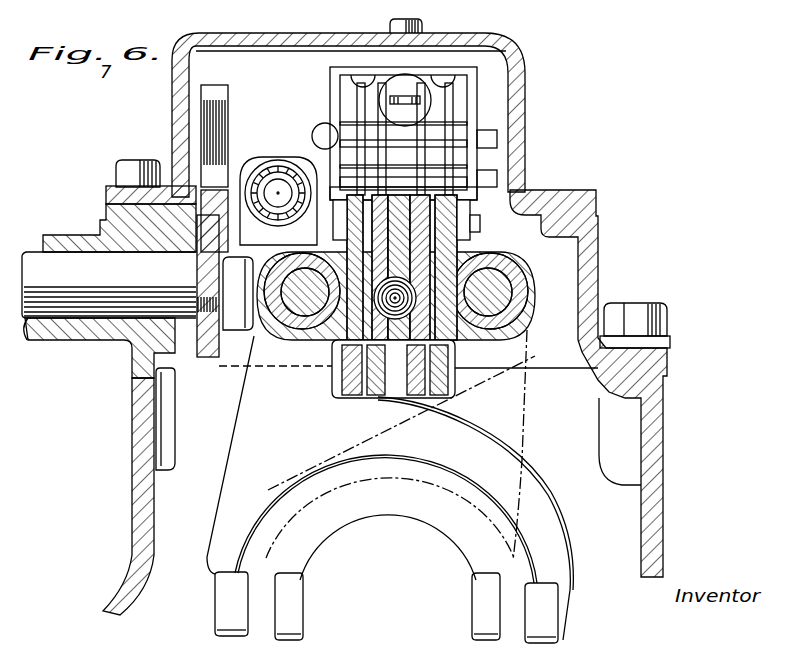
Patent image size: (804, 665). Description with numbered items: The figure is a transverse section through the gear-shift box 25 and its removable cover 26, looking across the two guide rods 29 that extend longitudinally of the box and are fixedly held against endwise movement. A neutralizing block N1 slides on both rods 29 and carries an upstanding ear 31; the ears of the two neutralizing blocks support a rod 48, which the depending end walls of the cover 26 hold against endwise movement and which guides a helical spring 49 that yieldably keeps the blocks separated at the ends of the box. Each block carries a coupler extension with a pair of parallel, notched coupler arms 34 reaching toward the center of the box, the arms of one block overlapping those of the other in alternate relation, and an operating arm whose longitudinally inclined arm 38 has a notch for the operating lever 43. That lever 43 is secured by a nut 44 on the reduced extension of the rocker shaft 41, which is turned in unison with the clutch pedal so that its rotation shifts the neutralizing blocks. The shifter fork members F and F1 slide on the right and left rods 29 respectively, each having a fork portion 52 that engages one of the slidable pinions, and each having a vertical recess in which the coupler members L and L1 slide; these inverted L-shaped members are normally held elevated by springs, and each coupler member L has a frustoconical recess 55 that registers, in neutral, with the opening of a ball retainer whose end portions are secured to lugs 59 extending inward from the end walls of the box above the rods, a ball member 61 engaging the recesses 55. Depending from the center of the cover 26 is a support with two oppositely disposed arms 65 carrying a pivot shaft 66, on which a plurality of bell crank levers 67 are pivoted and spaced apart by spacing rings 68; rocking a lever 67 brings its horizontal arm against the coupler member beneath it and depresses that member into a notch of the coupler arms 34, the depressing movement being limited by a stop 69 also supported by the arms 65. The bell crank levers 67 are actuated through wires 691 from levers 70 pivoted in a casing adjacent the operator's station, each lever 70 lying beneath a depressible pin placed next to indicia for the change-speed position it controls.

The gear-shift box 25 is at (598, 266).
The removable cover 26 is at (420, 120).
The guide rods 29 is at (500, 288).
The upstanding ear 31 is at (250, 172).
The coupler arms 34 is at (370, 393).
The longitudinally inclined arm 38 is at (220, 124).
The rocker shaft 41 is at (34, 332).
The operating lever 43 is at (208, 354).
The nut 44 is at (195, 285).
The rod 48 is at (275, 176).
The helical spring 49 is at (278, 201).
The fork portion 52 is at (555, 509).
The frustoconical recess 55 is at (510, 266).
The lugs 59 is at (470, 244).
The ball member 61 is at (456, 368).
The arms 65 is at (333, 77).
The pivot shaft 66 is at (480, 176).
The bell crank levers 67 is at (449, 108).
The spacing rings 68 is at (433, 163).
The stop 69 is at (477, 144).
The wires 691 is at (405, 100).
The levers 70 is at (137, 463).
The coupler member L is at (457, 248).
The coupler member L1 is at (466, 230).
The shifter fork member F is at (408, 404).
The shifter fork member F1 is at (263, 347).
The neutralizing block N1 is at (237, 290).